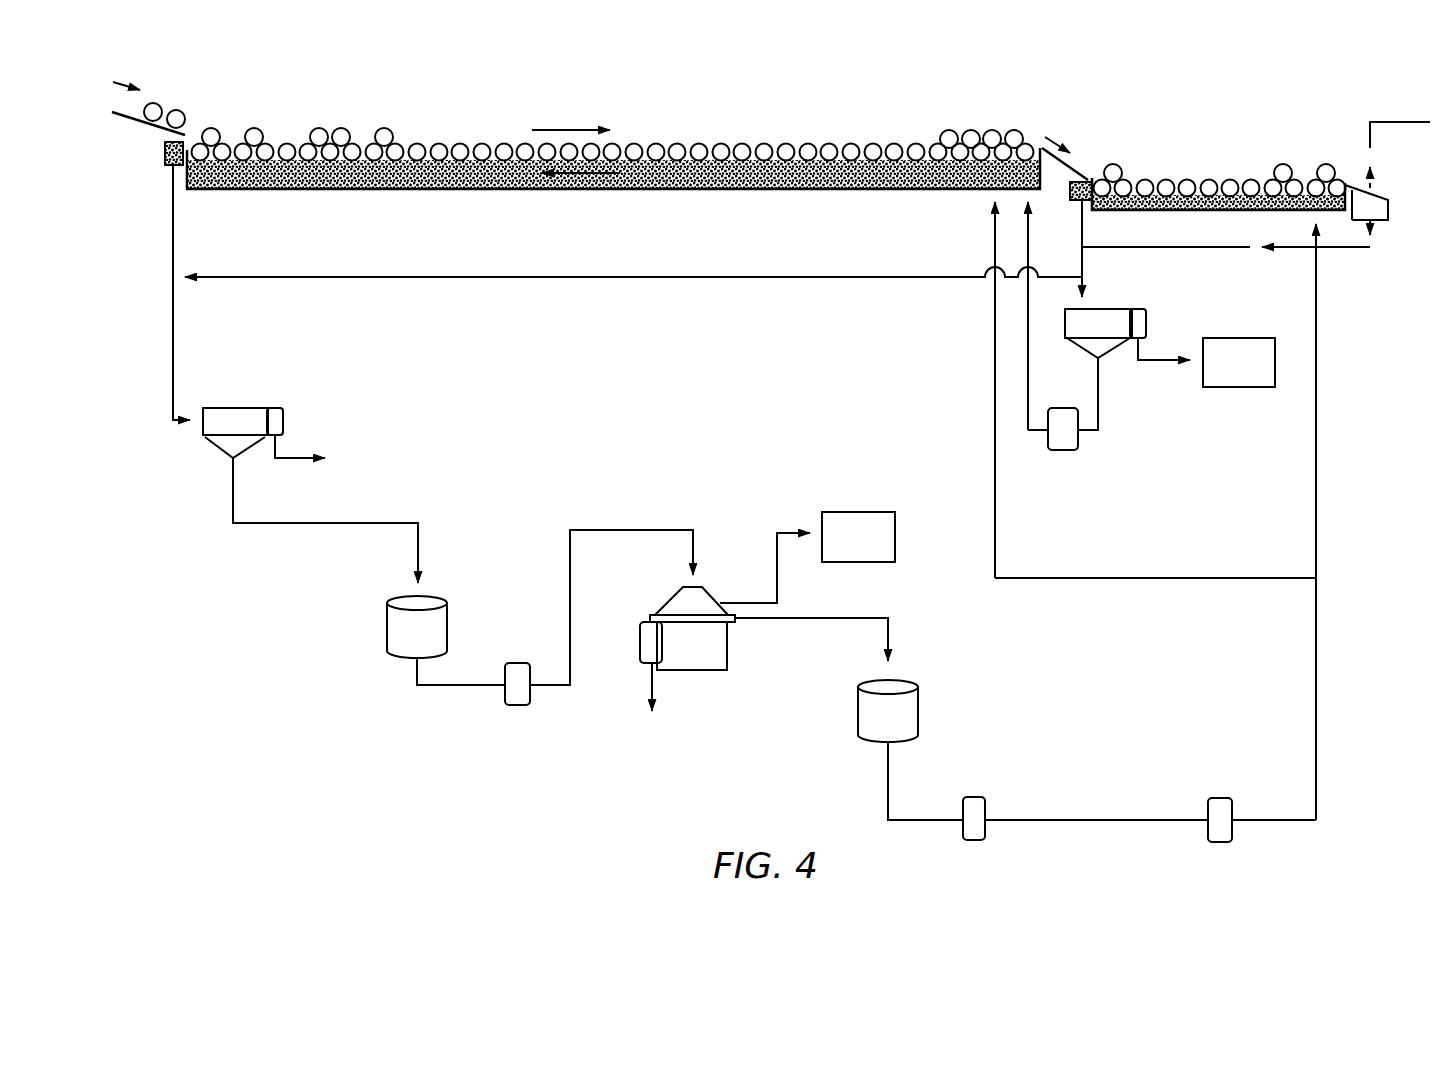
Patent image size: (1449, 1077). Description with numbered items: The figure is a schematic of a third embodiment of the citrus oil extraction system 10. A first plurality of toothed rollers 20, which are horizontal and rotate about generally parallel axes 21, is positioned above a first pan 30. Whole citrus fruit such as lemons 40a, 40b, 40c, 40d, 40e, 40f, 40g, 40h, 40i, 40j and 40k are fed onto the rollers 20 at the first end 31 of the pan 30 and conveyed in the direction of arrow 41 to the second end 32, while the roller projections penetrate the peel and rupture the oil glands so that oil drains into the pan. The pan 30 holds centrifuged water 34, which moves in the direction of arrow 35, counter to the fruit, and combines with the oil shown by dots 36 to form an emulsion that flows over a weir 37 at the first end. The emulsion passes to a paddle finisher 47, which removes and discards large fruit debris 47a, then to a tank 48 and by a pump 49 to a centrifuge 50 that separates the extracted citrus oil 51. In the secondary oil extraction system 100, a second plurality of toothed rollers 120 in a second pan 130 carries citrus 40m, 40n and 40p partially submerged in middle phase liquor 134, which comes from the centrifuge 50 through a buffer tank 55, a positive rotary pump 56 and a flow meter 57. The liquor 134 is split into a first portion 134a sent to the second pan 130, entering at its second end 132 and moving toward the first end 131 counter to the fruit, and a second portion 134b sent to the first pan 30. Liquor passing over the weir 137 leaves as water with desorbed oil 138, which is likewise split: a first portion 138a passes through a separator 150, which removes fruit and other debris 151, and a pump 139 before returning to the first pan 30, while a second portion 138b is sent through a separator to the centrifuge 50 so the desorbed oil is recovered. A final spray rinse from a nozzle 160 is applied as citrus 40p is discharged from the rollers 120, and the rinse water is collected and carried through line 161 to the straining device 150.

The citrus oil extraction system 10 is at (875, 66).
The first plurality of toothed rollers 20 is at (667, 140).
The parallel axes 21 is at (657, 155).
The first pan 30 is at (388, 190).
The first end of first pan 31 is at (182, 190).
The second end of first pan 32 is at (1038, 197).
The centrifuged water 34 is at (1007, 178).
The water flow direction arrow 35 is at (576, 183).
The oil 36 is at (223, 177).
The weir 37 is at (166, 136).
The lemon 40a is at (155, 103).
The lemon 40b is at (179, 110).
The lemon 40c is at (214, 128).
The lemon 40d is at (257, 128).
The lemon 40e is at (321, 128).
The lemon 40f is at (344, 128).
The lemon 40g is at (388, 128).
The lemon 40h is at (945, 131).
The lemon 40i is at (968, 130).
The lemon 40j is at (994, 130).
The lemon 40k is at (1017, 130).
The citrus item 40m is at (1116, 162).
The citrus item 40n is at (1281, 163).
The citrus item 40p is at (1325, 163).
The citrus conveying direction arrow 41 is at (568, 121).
The paddle finisher 47 is at (242, 407).
The large fruit debris 47a is at (340, 458).
The tank 48 is at (383, 624).
The pump 49 is at (517, 661).
The centrifuge 50 is at (698, 677).
The extracted citrus oil 51 is at (858, 537).
The buffer tank 55 is at (857, 707).
The positive rotary pump 56 is at (977, 792).
The flow meter 57 is at (1220, 795).
The secondary oil extraction system 100 is at (1195, 112).
The second plurality of toothed rollers 120 is at (1148, 183).
The second pan 130 is at (1210, 222).
The first end of second pan 131 is at (1087, 207).
The second end of second pan 132 is at (1357, 249).
The middle phase liquor 134 is at (860, 618).
The first portion of middle phase liquor 134a is at (1318, 535).
The second portion of middle phase liquor 134b is at (1147, 577).
The weir 137 is at (1090, 166).
The water with desorbed oil 138 is at (1083, 270).
The first portion of discharged liquor 138a is at (1023, 378).
The second portion of discharged liquor 138b is at (590, 283).
The pump 139 is at (1086, 456).
The separator 150 is at (1052, 325).
The fruit and other debris 151 is at (1239, 362).
The nozzle 160 is at (1382, 112).
The line 161 is at (1307, 251).